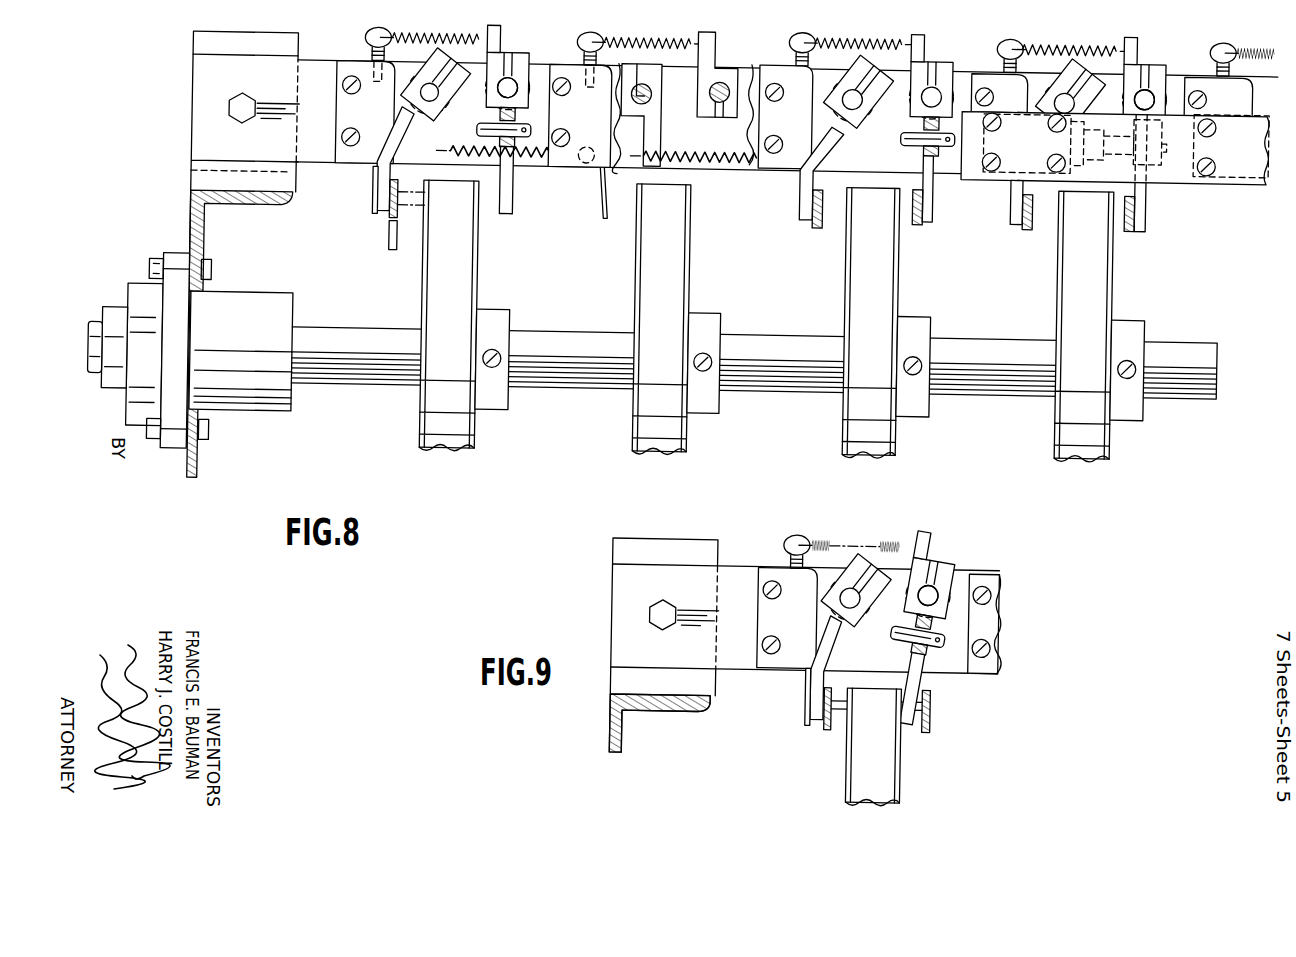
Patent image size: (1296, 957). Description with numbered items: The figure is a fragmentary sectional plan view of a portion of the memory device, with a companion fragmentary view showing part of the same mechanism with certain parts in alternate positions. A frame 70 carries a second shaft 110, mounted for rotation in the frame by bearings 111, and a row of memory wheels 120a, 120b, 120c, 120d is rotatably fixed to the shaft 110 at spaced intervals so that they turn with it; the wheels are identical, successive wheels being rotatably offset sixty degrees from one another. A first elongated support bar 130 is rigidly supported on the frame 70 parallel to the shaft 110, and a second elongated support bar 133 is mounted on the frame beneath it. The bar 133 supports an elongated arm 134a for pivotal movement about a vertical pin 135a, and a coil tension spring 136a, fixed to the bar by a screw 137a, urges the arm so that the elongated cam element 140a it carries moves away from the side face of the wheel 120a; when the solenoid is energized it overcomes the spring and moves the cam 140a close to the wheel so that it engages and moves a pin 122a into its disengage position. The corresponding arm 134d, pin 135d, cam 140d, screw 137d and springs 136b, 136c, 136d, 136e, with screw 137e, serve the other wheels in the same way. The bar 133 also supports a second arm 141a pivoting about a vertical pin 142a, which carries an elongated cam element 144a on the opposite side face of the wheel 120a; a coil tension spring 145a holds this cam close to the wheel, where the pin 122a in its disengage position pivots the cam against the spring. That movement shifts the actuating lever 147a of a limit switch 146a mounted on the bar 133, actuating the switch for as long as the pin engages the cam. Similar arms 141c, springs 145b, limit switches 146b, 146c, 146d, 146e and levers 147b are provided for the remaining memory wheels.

In FIG. 9, the frame 70 is at (673, 548).
In FIG. 8, the second shaft 110 is at (562, 385).
In FIG. 8, the bearings 111 is at (150, 286).
In FIG. 8, the memory wheel 120a is at (440, 425).
In FIG. 9, the memory wheel 120a is at (886, 785).
In FIG. 8, the memory wheel 120b is at (655, 427).
In FIG. 8, the memory wheel 120c is at (865, 434).
In FIG. 8, the memory wheel 120d is at (1075, 432).
In FIG. 8, the pin 122a is at (487, 214).
In FIG. 9, the pin 122a is at (910, 708).
In FIG. 8, the first elongated support bar 130 is at (1172, 168).
In FIG. 9, the second elongated support bar 133 is at (962, 572).
In FIG. 8, the elongated arm 134a is at (494, 50).
In FIG. 9, the elongated arm 134a is at (946, 708).
In FIG. 8, the elongated arm 134d is at (1150, 52).
In FIG. 8, the vertical pin 135a is at (518, 90).
In FIG. 9, the vertical pin 135a is at (934, 585).
In FIG. 8, the vertical pin 135d is at (1152, 95).
In FIG. 8, the coil tension spring 136a is at (446, 33).
In FIG. 9, the coil tension spring 136a is at (822, 540).
In FIG. 8, the coil tension spring 136b is at (637, 36).
In FIG. 8, the coil tension spring 136c is at (838, 33).
In FIG. 8, the coil tension spring 136d is at (1060, 35).
In FIG. 8, the coil tension spring 136e is at (1252, 36).
In FIG. 8, the screw 137a is at (387, 20).
In FIG. 9, the screw 137a is at (799, 532).
In FIG. 8, the screw 137d is at (1011, 27).
In FIG. 8, the screw 137e is at (1222, 27).
In FIG. 8, the elongated cam element 140a is at (508, 210).
In FIG. 9, the elongated cam element 140a is at (935, 722).
In FIG. 8, the elongated cam element 140d is at (1145, 217).
In FIG. 8, the second arm 141a is at (380, 185).
In FIG. 9, the second arm 141a is at (818, 722).
In FIG. 8, the second arm 141c is at (808, 208).
In FIG. 8, the vertical pin 142a is at (420, 95).
In FIG. 9, the vertical pin 142a is at (866, 612).
In FIG. 8, the elongated cam element 144a is at (392, 240).
In FIG. 9, the elongated cam element 144a is at (830, 728).
In FIG. 8, the coil tension spring 145a is at (527, 153).
In FIG. 8, the coil tension spring 145b is at (703, 160).
In FIG. 8, the limit switch 146a is at (346, 62).
In FIG. 9, the limit switch 146a is at (771, 616).
In FIG. 8, the limit switch 146b is at (558, 66).
In FIG. 9, the limit switch 146b is at (996, 582).
In FIG. 8, the limit switch 146c is at (778, 70).
In FIG. 8, the limit switch 146d is at (985, 65).
In FIG. 8, the limit switch 146e is at (1236, 80).
In FIG. 8, the actuating lever 147a is at (377, 206).
In FIG. 9, the actuating lever 147a is at (808, 714).
In FIG. 8, the actuating lever 147b is at (604, 182).